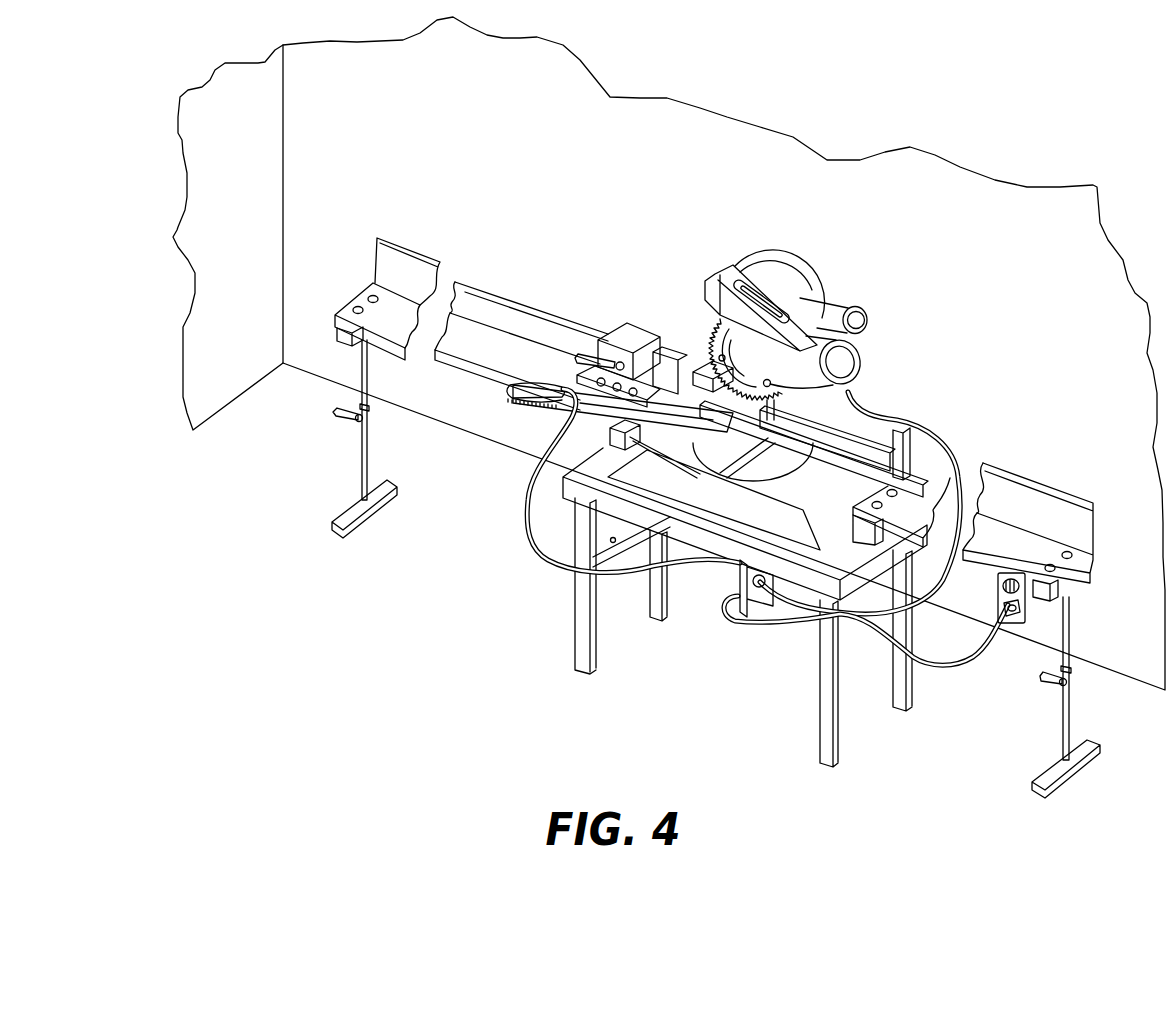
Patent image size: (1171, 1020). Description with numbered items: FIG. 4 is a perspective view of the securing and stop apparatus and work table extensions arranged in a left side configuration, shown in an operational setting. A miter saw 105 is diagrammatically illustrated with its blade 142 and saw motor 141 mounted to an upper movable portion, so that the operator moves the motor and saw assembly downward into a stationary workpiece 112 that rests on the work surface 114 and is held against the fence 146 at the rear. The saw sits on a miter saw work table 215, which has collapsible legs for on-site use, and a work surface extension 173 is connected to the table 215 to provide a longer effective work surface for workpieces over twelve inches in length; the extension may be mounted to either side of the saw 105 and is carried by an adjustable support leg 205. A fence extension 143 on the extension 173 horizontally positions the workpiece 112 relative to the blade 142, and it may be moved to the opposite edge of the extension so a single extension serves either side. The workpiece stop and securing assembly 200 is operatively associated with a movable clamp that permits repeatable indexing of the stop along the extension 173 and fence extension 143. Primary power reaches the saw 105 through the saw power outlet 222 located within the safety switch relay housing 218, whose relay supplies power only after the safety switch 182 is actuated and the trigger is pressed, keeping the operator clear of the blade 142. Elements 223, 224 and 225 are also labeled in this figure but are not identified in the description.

The miter saw 105 is at (876, 297).
The workpiece 112 is at (910, 477).
The work surface 114 is at (748, 458).
The saw motor 141 is at (847, 363).
The blade 142 is at (712, 340).
The fence extension 143 is at (467, 293).
The fence 146 is at (853, 437).
The work surface extension 173 is at (363, 297).
The safety switch 182 is at (517, 383).
The workpiece stop and securing assembly 200 is at (620, 305).
The adjustable support leg 205 is at (1060, 703).
The miter saw work table 215 is at (827, 565).
The safety switch relay housing 218 is at (673, 568).
The saw power outlet 222 is at (760, 580).
The power cord 223 is at (903, 417).
The sensor cable 224 is at (527, 523).
The handle 225 is at (738, 283).